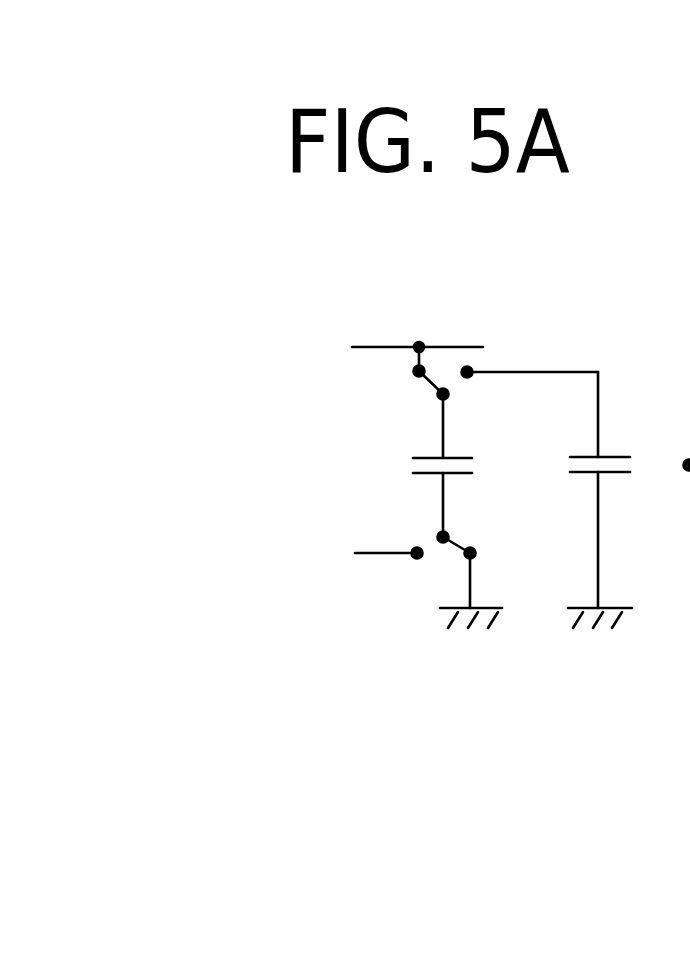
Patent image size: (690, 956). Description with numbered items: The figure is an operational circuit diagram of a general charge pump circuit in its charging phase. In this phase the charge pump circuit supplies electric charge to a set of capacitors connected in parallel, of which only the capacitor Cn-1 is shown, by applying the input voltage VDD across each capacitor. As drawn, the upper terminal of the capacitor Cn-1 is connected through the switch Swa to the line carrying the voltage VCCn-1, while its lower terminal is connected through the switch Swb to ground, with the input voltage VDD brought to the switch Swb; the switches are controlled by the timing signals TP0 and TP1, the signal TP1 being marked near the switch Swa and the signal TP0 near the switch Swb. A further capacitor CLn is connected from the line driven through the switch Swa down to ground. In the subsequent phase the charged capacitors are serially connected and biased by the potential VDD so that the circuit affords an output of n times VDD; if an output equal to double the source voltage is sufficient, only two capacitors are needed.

The switch Swa is at (445, 370).
The switch Swb is at (432, 565).
The capacitor Cn−1 Cn-1 is at (476, 438).
The capacitor CLn is at (572, 500).
The timing signal TP0 is at (401, 516).
The timing signal TP1 is at (392, 426).
The input voltage VDD is at (307, 583).
The voltage VCCn-1 is at (319, 371).